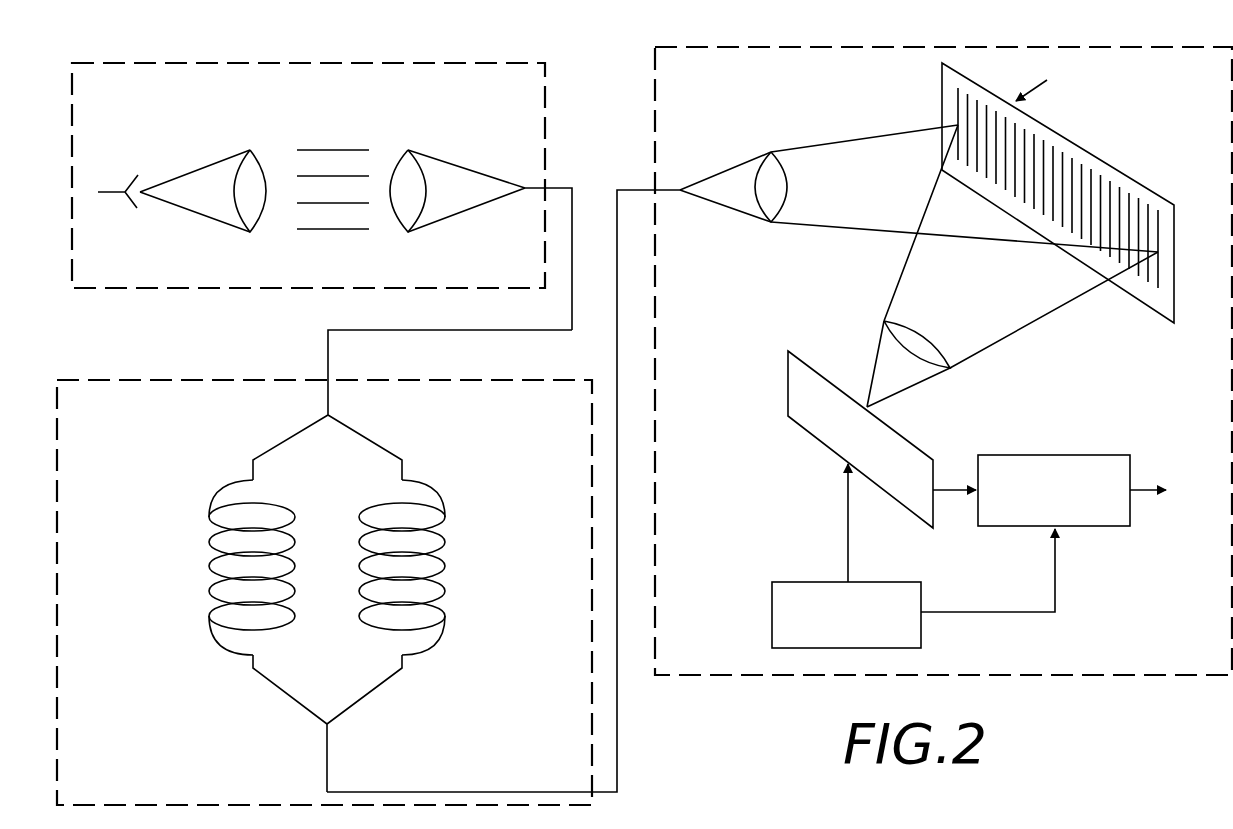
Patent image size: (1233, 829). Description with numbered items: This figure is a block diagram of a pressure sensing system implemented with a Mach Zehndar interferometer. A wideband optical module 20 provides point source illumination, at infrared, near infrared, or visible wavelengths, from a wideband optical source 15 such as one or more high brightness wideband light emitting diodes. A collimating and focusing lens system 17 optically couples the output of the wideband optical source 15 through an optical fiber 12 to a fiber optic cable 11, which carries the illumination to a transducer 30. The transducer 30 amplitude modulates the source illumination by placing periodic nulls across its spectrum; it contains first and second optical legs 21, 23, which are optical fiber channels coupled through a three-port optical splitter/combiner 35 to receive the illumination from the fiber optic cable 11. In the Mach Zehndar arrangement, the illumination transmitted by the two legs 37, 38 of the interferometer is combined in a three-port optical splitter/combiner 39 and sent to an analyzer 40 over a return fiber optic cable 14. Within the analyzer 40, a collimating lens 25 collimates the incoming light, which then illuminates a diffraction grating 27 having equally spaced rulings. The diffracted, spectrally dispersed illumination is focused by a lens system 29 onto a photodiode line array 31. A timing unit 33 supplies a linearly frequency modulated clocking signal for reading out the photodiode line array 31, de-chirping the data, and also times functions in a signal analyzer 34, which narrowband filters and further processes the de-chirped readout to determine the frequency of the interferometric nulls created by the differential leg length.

The fiber optic cable 11 is at (457, 331).
The optical fiber 12 is at (580, 198).
The return fiber optic cable 14 is at (619, 222).
The wideband optical source 15 is at (124, 200).
The collimating and focusing lens system 17 is at (240, 240).
The wideband optical module 20 is at (546, 100).
The first optical leg 21 is at (285, 506).
The second optical leg 23 is at (428, 487).
The collimating lens 25 is at (787, 188).
The diffraction grating 27 is at (1152, 200).
The lens system 29 is at (935, 337).
The transducer 30 is at (566, 380).
The photodiode line array 31 is at (912, 437).
The timing unit 33 is at (905, 582).
The signal analyzer 34 is at (1120, 455).
The three-port optical splitter/combiner 35 is at (331, 416).
The interferometer leg 37 is at (295, 672).
The interferometer leg 38 is at (388, 682).
The three-port optical splitter/combiner 39 is at (331, 727).
The analyzer 40 is at (655, 78).